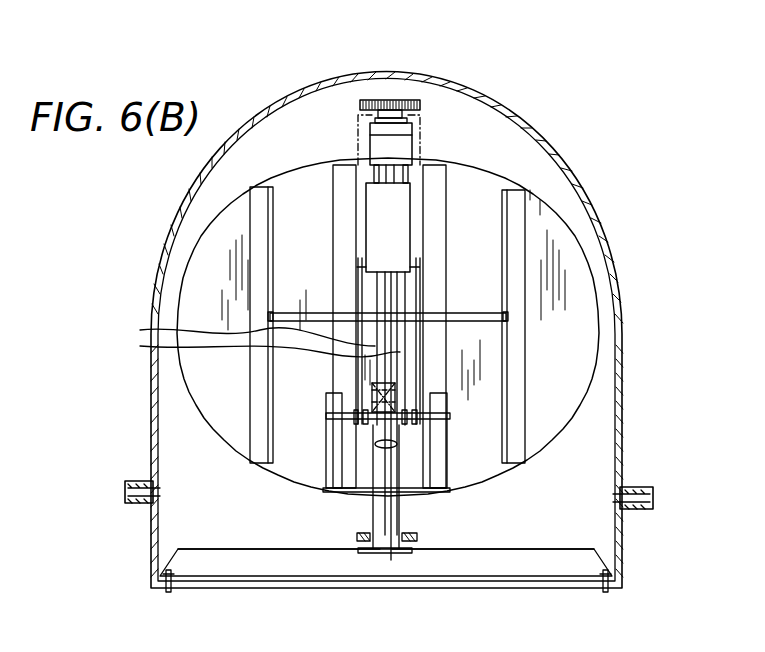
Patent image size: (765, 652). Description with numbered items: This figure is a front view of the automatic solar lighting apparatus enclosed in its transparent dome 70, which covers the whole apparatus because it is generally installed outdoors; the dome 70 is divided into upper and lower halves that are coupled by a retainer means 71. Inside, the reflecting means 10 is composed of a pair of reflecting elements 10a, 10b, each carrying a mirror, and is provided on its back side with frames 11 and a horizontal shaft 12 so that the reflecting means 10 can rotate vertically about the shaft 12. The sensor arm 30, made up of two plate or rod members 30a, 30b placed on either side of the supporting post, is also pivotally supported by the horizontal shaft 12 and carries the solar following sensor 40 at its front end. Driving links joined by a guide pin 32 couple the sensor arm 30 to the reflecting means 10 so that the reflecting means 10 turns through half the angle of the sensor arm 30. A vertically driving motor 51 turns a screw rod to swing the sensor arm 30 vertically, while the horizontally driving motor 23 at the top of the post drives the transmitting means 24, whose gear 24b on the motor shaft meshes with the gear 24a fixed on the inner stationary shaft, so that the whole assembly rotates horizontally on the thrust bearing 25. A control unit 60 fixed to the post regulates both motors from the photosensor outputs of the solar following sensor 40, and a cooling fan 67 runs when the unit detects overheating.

The reflecting means 10 is at (492, 616).
The reflecting element 10a is at (300, 447).
The reflecting element 10b is at (483, 467).
The frames 11 is at (275, 193).
The horizontal shaft 12 is at (465, 318).
The horizontally driving motor 23 is at (400, 149).
The transmitting means 24 is at (411, 65).
The gear 24a is at (413, 100).
The gear 24b is at (388, 100).
The thrust bearing 25 is at (408, 537).
The sensor arm 30 is at (227, 341).
The plate or rod member 30a is at (236, 331).
The plate or rod member 30b is at (95, 322).
The guide pin 32 is at (430, 398).
The solar following sensor 40 is at (397, 403).
The vertically driving motor 51 is at (380, 463).
The control unit 60 is at (397, 210).
The cooling fan 67 is at (357, 123).
The transparent dome 70 is at (240, 130).
The retainer means 71 is at (138, 481).